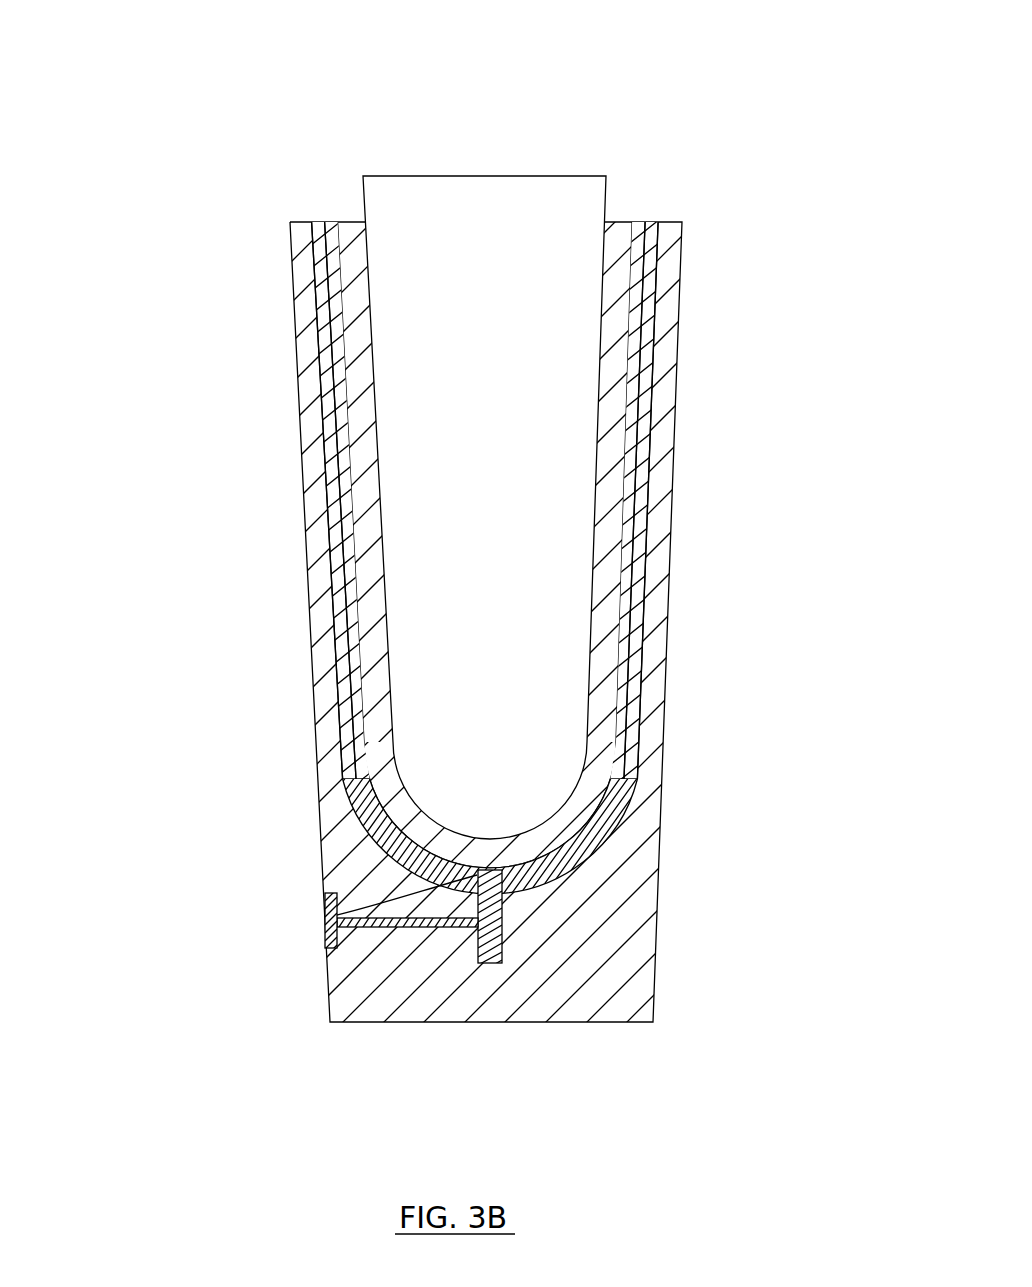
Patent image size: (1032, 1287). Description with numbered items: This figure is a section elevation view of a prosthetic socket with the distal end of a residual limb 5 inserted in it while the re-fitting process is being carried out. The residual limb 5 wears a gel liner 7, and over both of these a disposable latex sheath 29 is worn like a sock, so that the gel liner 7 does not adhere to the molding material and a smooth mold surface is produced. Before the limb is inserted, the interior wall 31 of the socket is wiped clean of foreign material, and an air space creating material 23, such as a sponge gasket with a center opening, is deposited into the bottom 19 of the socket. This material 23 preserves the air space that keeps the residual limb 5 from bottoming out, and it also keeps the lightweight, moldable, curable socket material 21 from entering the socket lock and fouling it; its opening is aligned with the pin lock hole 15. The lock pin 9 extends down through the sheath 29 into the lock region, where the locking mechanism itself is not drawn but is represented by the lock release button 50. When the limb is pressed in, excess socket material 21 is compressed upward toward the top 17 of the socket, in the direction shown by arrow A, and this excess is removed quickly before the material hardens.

The residual limb 5 is at (479, 511).
The gel liner 7 is at (617, 221).
The lock pin 9 is at (503, 927).
The pin lock hole 15 is at (325, 918).
The top of the socket 17 is at (355, 220).
The bottom of the socket 19 is at (478, 903).
The moldable, curable socket material 21 is at (327, 333).
The air space creating material 23 is at (600, 824).
The latex sheath 29 is at (345, 757).
The interior wall 31 is at (330, 533).
The lock release button 50 is at (325, 918).
The arrow A is at (323, 220).